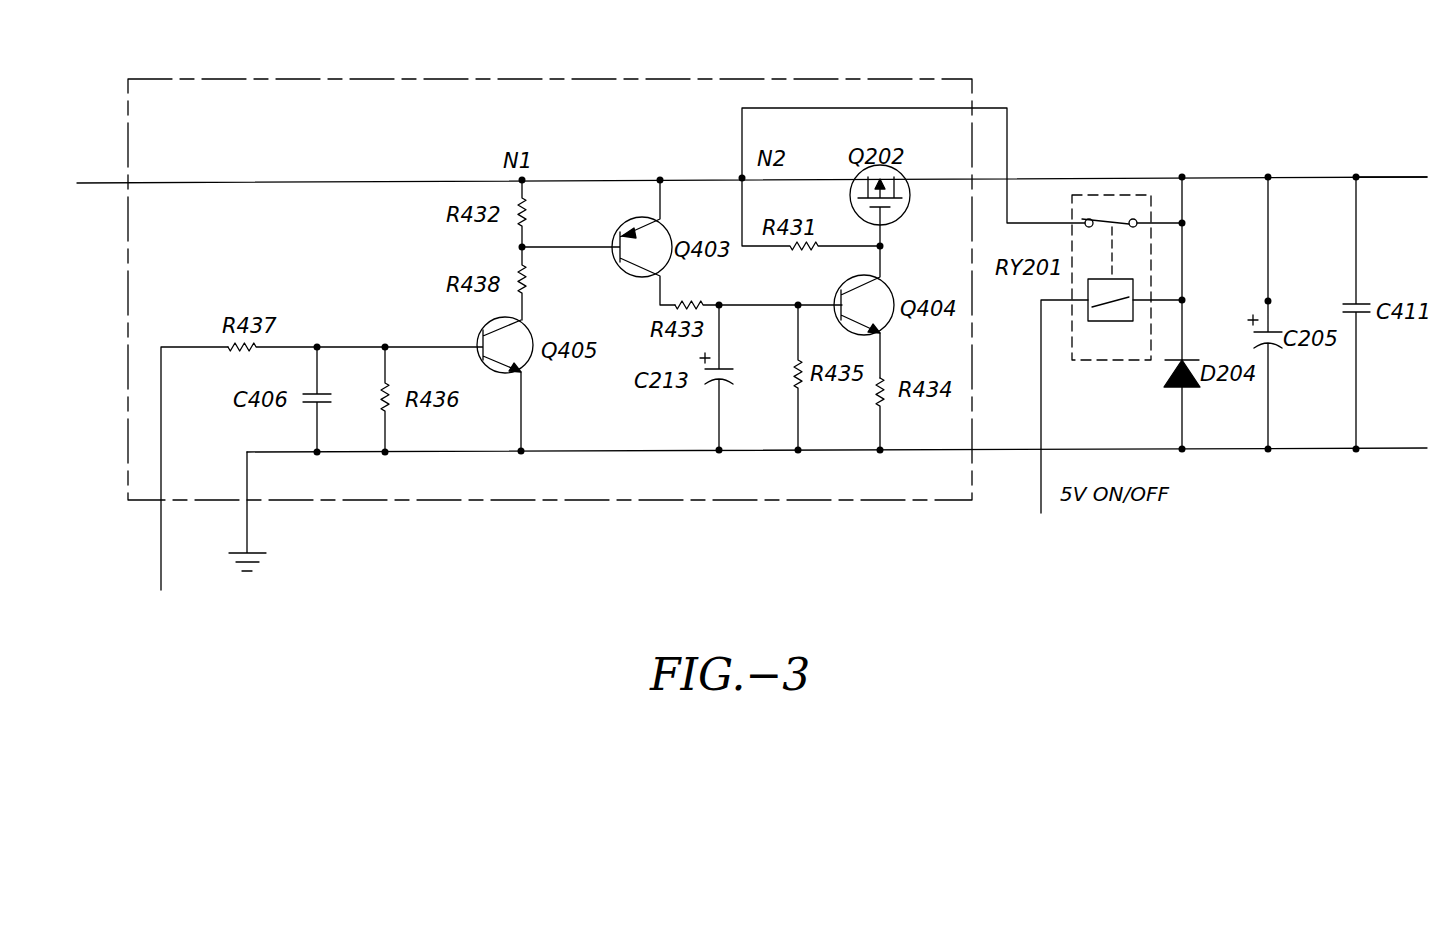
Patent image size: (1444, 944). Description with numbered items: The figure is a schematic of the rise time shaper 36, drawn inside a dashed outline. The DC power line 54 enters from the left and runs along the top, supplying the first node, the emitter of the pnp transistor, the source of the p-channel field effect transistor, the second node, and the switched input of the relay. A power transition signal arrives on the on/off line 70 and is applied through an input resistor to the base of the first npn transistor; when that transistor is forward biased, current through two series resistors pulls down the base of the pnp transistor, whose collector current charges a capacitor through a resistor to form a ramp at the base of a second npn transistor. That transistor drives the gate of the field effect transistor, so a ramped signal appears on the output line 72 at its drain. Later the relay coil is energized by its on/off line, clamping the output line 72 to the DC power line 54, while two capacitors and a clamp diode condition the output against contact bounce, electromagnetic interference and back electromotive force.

The +5 volt rise time shaper 36 is at (302, 78).
The +5 volt DC power line 54 is at (108, 183).
The on/off line 70 is at (161, 535).
The +5 volt output line 72 is at (1390, 177).